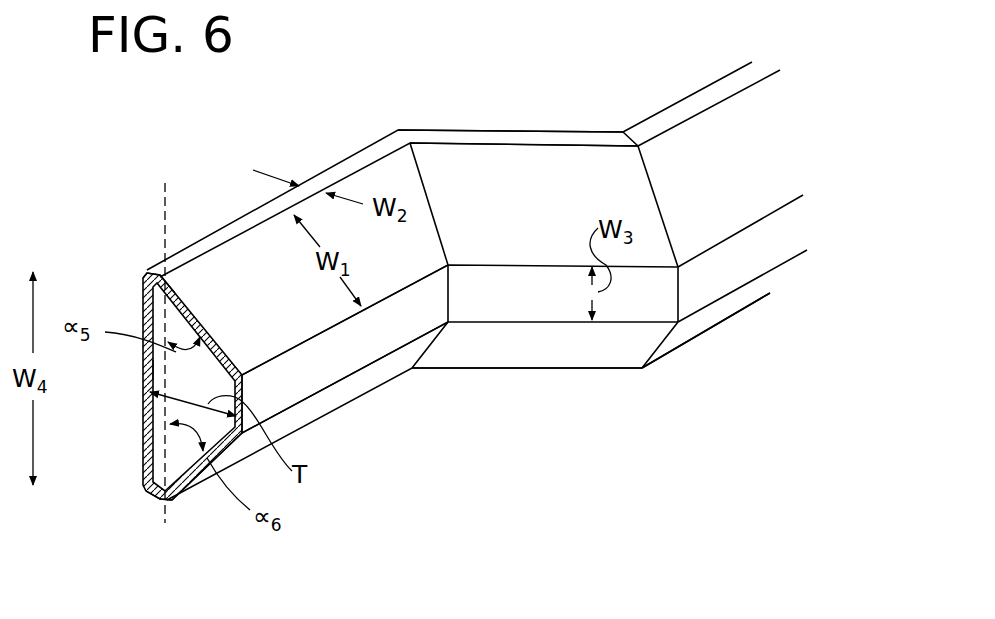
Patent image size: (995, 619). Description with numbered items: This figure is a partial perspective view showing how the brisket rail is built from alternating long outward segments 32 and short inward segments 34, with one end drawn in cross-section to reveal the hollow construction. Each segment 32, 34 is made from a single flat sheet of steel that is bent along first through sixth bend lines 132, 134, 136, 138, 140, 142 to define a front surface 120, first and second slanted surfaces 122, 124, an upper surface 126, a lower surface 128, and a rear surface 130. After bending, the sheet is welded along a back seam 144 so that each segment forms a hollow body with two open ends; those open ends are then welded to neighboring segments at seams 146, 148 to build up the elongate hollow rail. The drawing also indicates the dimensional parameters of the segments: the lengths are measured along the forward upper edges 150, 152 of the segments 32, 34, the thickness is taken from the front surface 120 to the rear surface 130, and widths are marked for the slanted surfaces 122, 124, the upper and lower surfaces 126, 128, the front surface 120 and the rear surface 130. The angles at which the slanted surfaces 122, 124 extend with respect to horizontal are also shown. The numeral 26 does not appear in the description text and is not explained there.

The elongated channel member 26 is at (566, 114).
The long outward segment 32 is at (722, 329).
The short inward segment 34 is at (600, 375).
The front surface 120 is at (358, 350).
The first slanted surface 122 is at (298, 420).
The second slanted surface 124 is at (245, 252).
The upper surface 126 is at (207, 243).
The lower surface 128 is at (497, 352).
The rear surface 130 is at (480, 163).
The first bend line 132 is at (298, 350).
The second bend line 134 is at (302, 402).
The third bend line 136 is at (168, 502).
The fourth bend line 138 is at (140, 469).
The fifth bend line 140 is at (163, 267).
The sixth bend line 142 is at (192, 263).
The back seam 144 is at (146, 372).
The seam 146 is at (442, 242).
The seam 148 is at (651, 183).
The forward upper edge 150 is at (362, 150).
The forward upper edge 152 is at (595, 125).